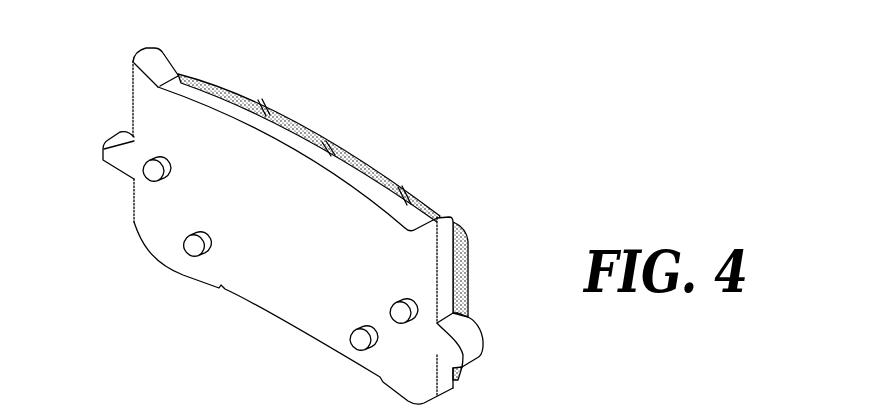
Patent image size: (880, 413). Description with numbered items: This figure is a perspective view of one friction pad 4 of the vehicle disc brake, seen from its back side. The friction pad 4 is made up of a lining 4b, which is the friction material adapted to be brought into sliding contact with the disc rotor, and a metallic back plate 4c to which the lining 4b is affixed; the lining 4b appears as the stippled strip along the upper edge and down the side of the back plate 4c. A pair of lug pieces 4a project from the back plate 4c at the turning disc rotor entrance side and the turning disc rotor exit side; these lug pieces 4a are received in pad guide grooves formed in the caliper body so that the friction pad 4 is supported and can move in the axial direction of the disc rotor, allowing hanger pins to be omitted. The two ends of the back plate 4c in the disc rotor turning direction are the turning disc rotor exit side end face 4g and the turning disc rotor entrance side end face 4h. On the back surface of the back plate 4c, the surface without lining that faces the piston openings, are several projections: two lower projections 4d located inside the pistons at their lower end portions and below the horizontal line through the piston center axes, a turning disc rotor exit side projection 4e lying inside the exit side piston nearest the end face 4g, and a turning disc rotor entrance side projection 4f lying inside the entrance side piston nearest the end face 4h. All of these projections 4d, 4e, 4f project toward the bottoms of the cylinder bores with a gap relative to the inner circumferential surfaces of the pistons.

The friction pad 4 is at (301, 43).
The lug piece 4a is at (478, 348).
The lining 4b is at (357, 152).
The back plate 4c is at (288, 136).
The lower projection 4d is at (189, 253).
The turning disc rotor exit side projection 4e is at (403, 323).
The turning disc rotor entrance side projection 4f is at (152, 183).
The turning disc rotor exit side end face 4g is at (445, 276).
The turning disc rotor entrance side end face 4h is at (134, 106).